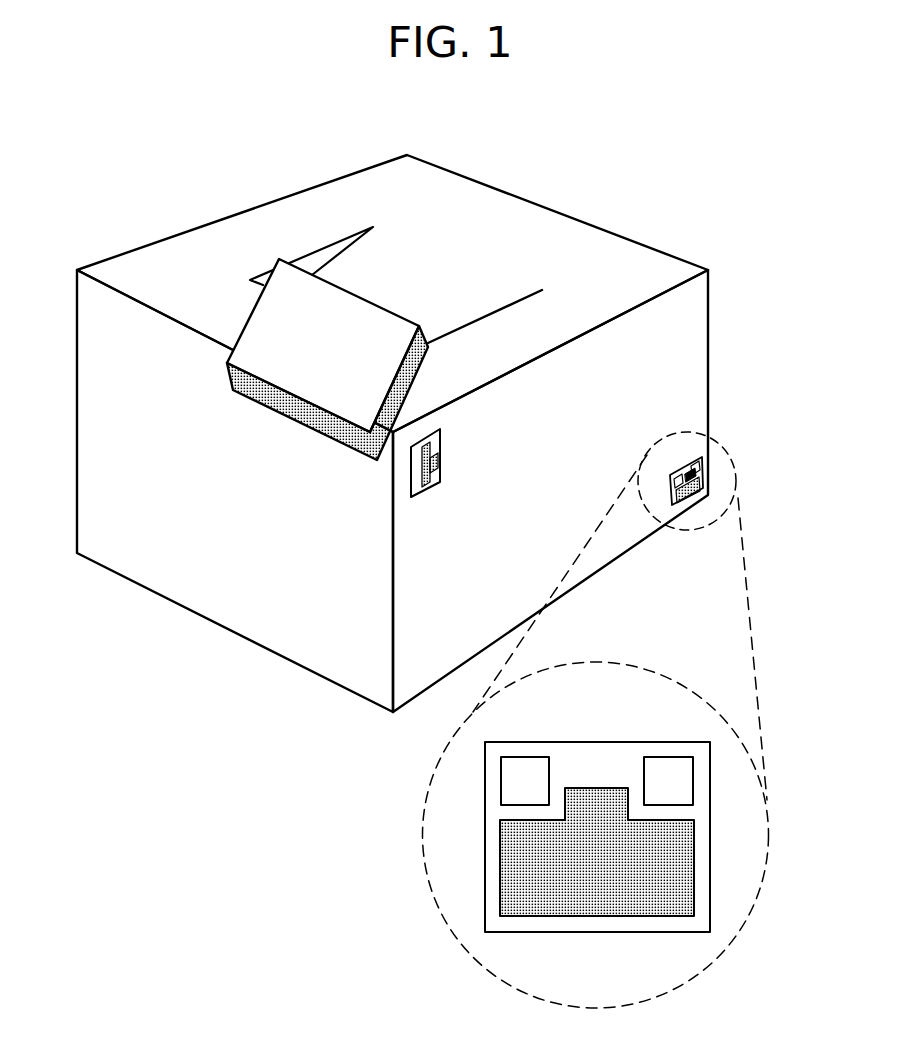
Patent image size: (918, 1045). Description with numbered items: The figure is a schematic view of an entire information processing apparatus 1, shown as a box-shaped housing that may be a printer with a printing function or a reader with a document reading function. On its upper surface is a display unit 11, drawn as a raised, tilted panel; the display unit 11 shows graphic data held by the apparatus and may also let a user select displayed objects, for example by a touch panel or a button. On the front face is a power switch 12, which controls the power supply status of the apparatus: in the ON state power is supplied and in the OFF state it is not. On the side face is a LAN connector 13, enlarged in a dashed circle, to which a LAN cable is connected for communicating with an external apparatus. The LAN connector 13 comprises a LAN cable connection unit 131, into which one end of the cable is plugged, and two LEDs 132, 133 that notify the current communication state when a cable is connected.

The information processing apparatus 1 is at (530, 218).
The display unit 11 is at (306, 392).
The power switch 12 is at (430, 490).
The LAN connector 13 is at (502, 933).
The LAN cable connection unit 131 is at (597, 917).
The LED 132 is at (525, 757).
The LED 133 is at (667, 757).